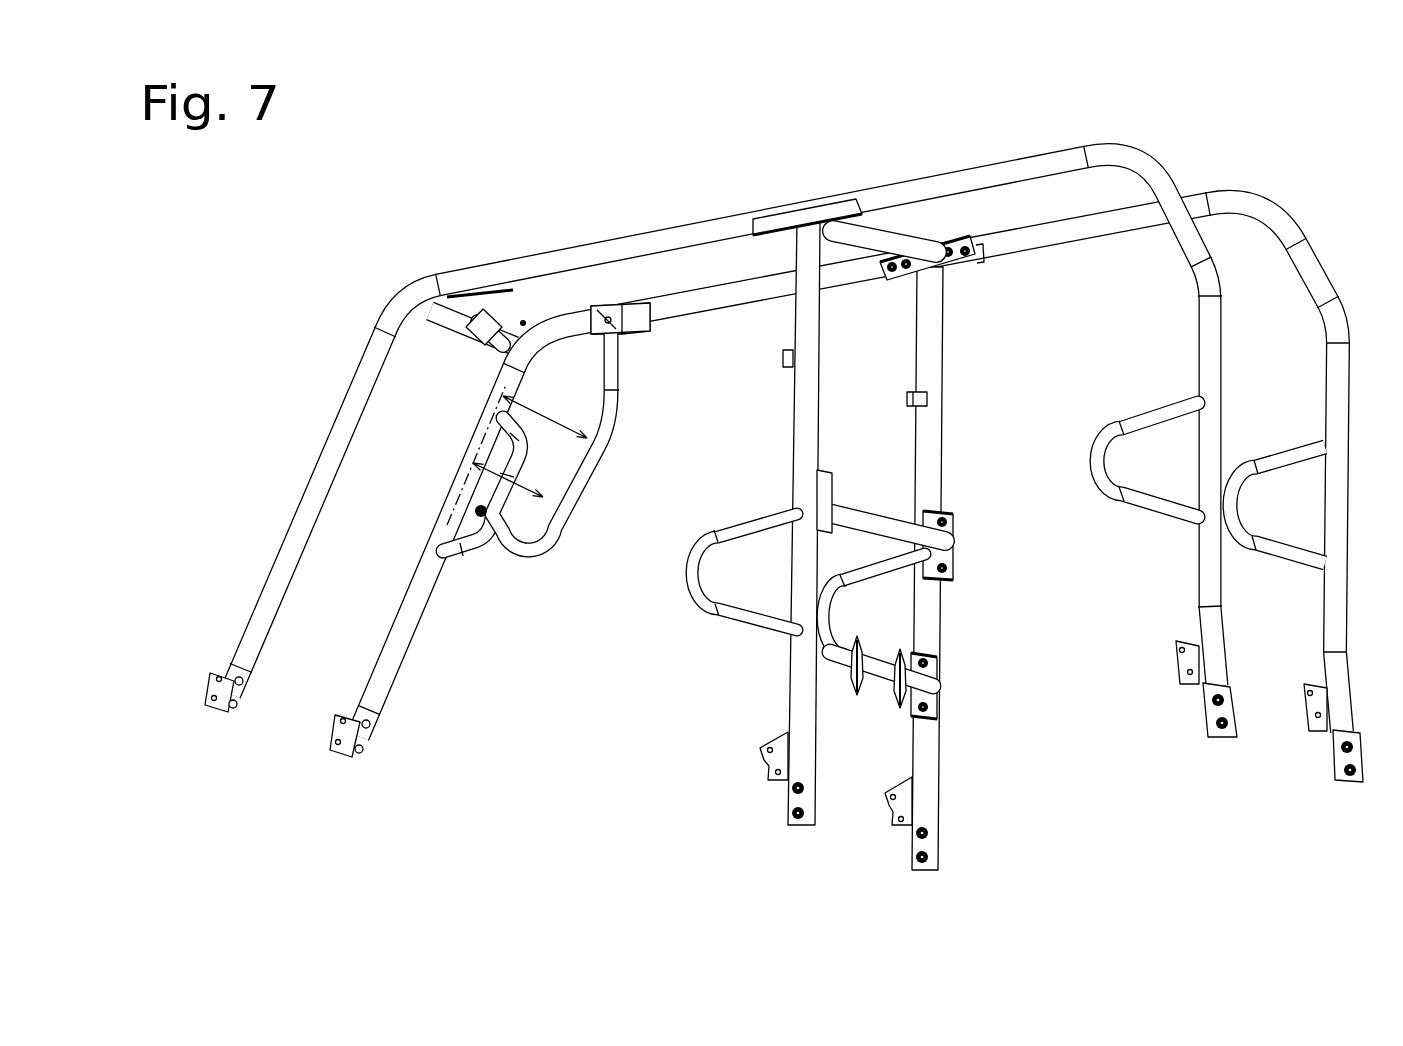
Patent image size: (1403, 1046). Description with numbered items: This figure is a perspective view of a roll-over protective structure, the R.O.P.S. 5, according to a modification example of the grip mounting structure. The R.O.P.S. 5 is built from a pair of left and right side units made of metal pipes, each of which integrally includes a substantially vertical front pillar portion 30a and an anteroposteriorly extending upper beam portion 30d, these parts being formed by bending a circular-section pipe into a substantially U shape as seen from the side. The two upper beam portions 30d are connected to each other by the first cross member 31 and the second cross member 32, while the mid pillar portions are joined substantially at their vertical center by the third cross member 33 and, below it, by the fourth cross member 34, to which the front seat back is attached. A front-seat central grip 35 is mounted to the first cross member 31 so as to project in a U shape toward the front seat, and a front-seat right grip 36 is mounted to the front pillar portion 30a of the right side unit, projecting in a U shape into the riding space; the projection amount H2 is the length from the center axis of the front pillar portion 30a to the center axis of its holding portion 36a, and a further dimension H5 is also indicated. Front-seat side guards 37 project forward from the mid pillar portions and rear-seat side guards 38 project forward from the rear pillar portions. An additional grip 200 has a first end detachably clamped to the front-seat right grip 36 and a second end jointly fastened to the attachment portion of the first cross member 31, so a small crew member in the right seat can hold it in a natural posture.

The R.O.P.S. 5 is at (465, 252).
The front pillar portion 30a is at (404, 595).
The upper beam portion 30d is at (677, 318).
The first cross member 31 is at (500, 300).
The second cross member 32 is at (890, 242).
The third cross member 33 is at (858, 512).
The fourth cross member 34 is at (845, 668).
The front-seat central grip 35 is at (490, 352).
The front-seat right grip 36 is at (475, 556).
The holding portion 36a is at (493, 530).
The front-seat side guard 37 is at (690, 600).
The rear-seat side guard 38 is at (1268, 465).
The additional grip 200 is at (601, 463).
The height dimension H5 is at (545, 415).
The projection amount H2 is at (515, 480).